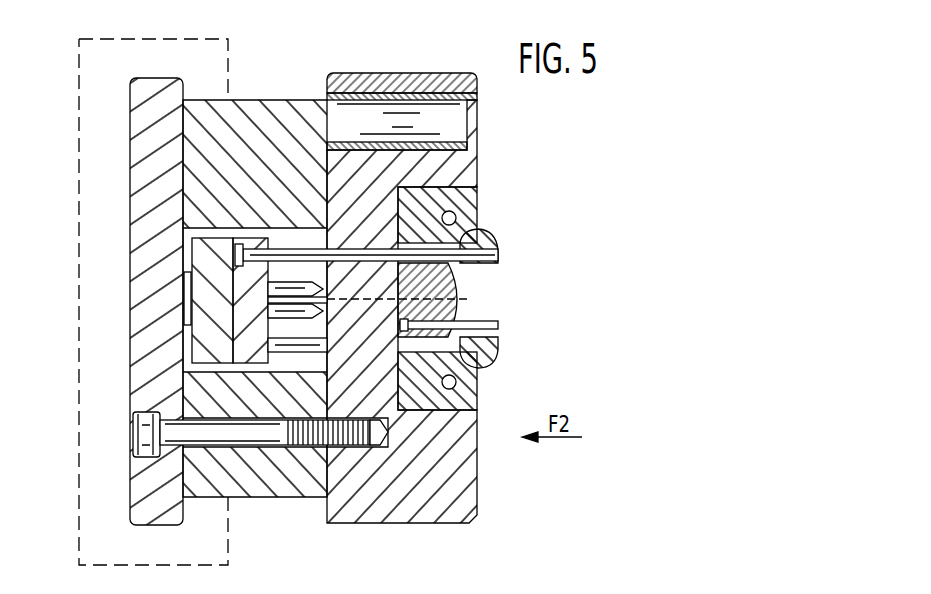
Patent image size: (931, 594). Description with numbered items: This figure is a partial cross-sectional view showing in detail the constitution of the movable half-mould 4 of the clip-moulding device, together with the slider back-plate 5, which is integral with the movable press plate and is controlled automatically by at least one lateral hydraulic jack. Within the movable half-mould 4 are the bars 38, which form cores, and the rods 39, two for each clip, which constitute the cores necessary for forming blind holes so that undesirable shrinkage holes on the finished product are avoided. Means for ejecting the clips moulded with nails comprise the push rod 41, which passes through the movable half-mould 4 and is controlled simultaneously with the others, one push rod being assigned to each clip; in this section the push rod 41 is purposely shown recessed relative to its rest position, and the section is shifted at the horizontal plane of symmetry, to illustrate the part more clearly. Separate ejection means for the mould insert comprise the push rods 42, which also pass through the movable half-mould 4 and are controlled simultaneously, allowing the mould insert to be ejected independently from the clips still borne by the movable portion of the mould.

The movable half-mould 4 is at (460, 525).
The slider back-plate 5 is at (92, 232).
The bars 38 is at (482, 228).
The rods 39 is at (490, 325).
The push rod 41 is at (498, 258).
The push rods 42 is at (301, 298).